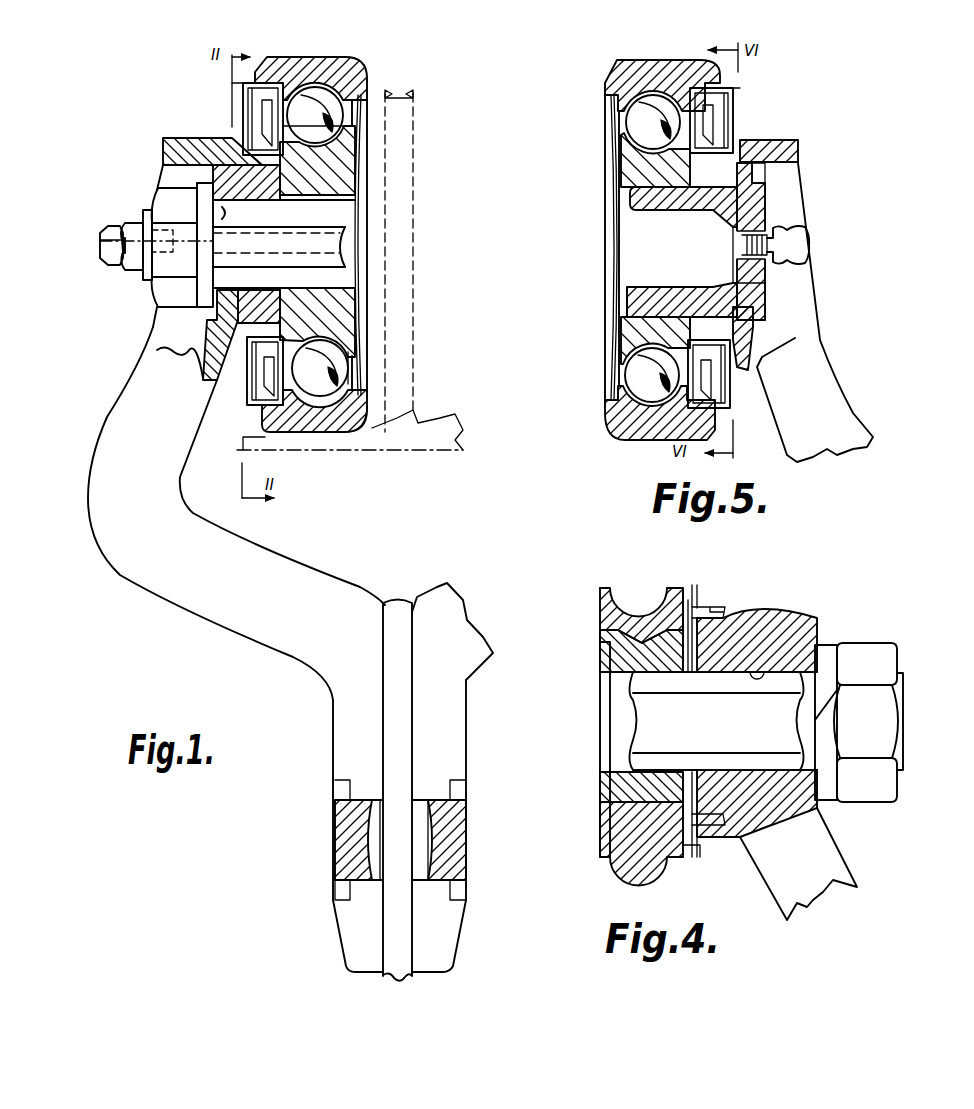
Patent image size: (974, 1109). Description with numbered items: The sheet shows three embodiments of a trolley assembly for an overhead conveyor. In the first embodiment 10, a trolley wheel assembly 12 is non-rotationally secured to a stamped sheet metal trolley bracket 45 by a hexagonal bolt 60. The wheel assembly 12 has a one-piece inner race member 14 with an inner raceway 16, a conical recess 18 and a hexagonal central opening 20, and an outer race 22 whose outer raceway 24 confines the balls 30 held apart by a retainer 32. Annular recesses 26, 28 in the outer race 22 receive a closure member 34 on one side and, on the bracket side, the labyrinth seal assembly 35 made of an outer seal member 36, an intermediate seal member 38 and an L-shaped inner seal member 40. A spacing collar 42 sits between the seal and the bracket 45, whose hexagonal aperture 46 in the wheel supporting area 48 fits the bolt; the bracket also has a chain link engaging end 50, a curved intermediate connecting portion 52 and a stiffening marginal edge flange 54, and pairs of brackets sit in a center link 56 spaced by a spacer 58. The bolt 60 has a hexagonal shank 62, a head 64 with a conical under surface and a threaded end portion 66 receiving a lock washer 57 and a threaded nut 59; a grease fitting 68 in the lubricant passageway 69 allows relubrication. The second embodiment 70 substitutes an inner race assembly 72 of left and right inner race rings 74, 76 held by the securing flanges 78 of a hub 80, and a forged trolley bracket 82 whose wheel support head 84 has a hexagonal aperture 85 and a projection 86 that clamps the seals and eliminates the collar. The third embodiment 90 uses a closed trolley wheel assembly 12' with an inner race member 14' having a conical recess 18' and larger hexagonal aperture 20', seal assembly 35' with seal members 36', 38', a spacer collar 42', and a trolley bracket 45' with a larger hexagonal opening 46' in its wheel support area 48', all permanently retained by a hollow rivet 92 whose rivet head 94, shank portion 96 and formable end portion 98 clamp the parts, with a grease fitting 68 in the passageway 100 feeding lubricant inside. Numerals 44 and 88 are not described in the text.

In FIG. 1, the trolley assembly 10 is at (376, 436).
In FIG. 1, the trolley wheel assembly 12 is at (433, 124).
In FIG. 5, the closed trolley wheel assembly 12' is at (565, 83).
In FIG. 1, the inner race member 14 is at (371, 241).
In FIG. 5, the inner race member 14' is at (620, 248).
In FIG. 1, the inner raceway 16 is at (330, 167).
In FIG. 1, the conical recess 18 is at (371, 195).
In FIG. 5, the conical recess 18' is at (643, 300).
In FIG. 1, the central opening 20 is at (293, 245).
In FIG. 5, the hexagonal aperture 20' is at (641, 226).
In FIG. 1, the outer race 22 is at (350, 74).
In FIG. 5, the outer race 22 is at (628, 75).
In FIG. 1, the outer raceway 24 is at (393, 98).
In FIG. 1, the annular recess 26 is at (372, 404).
In FIG. 1, the annular recess 28 is at (262, 410).
In FIG. 1, the balls 30 is at (330, 355).
In FIG. 5, the balls 30 is at (640, 368).
In FIG. 1, the retainer 32 is at (358, 369).
In FIG. 5, the retainer 32 is at (626, 121).
In FIG. 1, the closure member 34 is at (368, 300).
In FIG. 5, the closure member 34 is at (613, 231).
In FIG. 1, the labyrinth seal assembly 35 is at (199, 66).
In FIG. 5, the labyrinth seal assembly 35' is at (776, 78).
In FIG. 1, the outer seal member 36 is at (216, 109).
In FIG. 4, the outer seal member 36 is at (718, 697).
In FIG. 5, the outer seal member 36' is at (745, 120).
In FIG. 1, the intermediate seal member 38 is at (213, 123).
In FIG. 4, the intermediate seal member 38 is at (705, 696).
In FIG. 5, the intermediate seal member 38' is at (765, 125).
In FIG. 1, the inner seal member 40 is at (262, 106).
In FIG. 5, the inner seal member 40 is at (702, 100).
In FIG. 1, the spacing collar 42 is at (189, 320).
In FIG. 5, the spacer collar 42' is at (783, 346).
In FIG. 1, the bolt centerline 44 is at (268, 280).
In FIG. 1, the trolley bracket 45 is at (340, 533).
In FIG. 5, the trolley bracket 45' is at (844, 312).
In FIG. 1, the hexagonal aperture 46 is at (284, 244).
In FIG. 5, the hexagonal opening 46' is at (796, 173).
In FIG. 1, the wheel supporting area 48 is at (222, 180).
In FIG. 5, the wheel support area 48' is at (816, 338).
In FIG. 1, the chain link engaging end 50 is at (345, 707).
In FIG. 1, the intermediate connecting portion 52 is at (240, 608).
In FIG. 1, the marginal edge flange 54 is at (180, 150).
In FIG. 1, the center link 56 is at (340, 835).
In FIG. 1, the lock washer 57 is at (205, 301).
In FIG. 4, the lock washer 57 is at (832, 795).
In FIG. 1, the spacer 58 is at (402, 600).
In FIG. 1, the threaded nut 59 is at (165, 289).
In FIG. 4, the threaded nut 59 is at (860, 654).
In FIG. 1, the bolt 60 is at (352, 269).
In FIG. 4, the bolt 60 is at (597, 752).
In FIG. 4, the shank 62 is at (718, 724).
In FIG. 1, the head 64 is at (347, 243).
In FIG. 4, the head 64 is at (604, 720).
In FIG. 1, the threaded end portion 66 is at (145, 224).
In FIG. 4, the threaded end portion 66 is at (903, 679).
In FIG. 1, the grease fitting 68 is at (112, 262).
In FIG. 5, the grease fitting 68 is at (812, 250).
In FIG. 1, the lubricant passageway 69 is at (166, 229).
In FIG. 4, the modified embodiment 70 is at (805, 611).
In FIG. 4, the inner race assembly 72 is at (627, 584).
In FIG. 4, the left inner race ring 74 is at (606, 613).
In FIG. 4, the right inner race ring 76 is at (683, 586).
In FIG. 4, the securing flanges 78 is at (606, 648).
In FIG. 4, the hub 80 is at (655, 658).
In FIG. 4, the forged trolley bracket 82 is at (850, 866).
In FIG. 4, the wheel support head 84 is at (802, 630).
In FIG. 4, the hexagonal aperture 85 is at (760, 673).
In FIG. 4, the projection 86 is at (745, 799).
In FIG. 4, the seal spring 88 is at (698, 843).
In FIG. 5, the third embodiment 90 is at (897, 130).
In FIG. 5, the rivet 92 is at (772, 214).
In FIG. 5, the rivet head 94 is at (758, 176).
In FIG. 5, the shank portion 96 is at (766, 284).
In FIG. 5, the formable end portion 98 is at (632, 290).
In FIG. 5, the passageway 100 is at (790, 236).